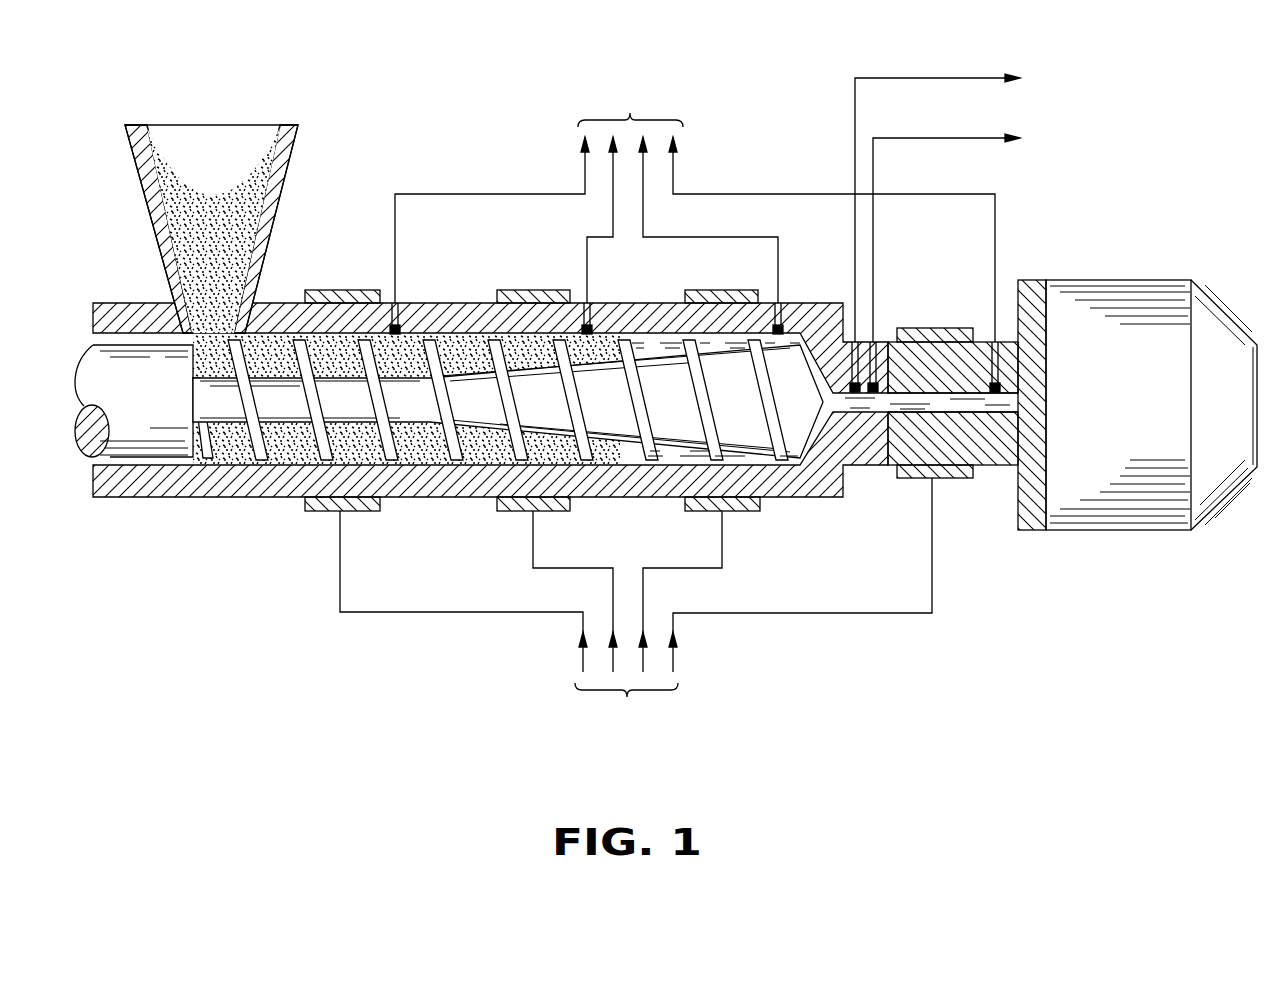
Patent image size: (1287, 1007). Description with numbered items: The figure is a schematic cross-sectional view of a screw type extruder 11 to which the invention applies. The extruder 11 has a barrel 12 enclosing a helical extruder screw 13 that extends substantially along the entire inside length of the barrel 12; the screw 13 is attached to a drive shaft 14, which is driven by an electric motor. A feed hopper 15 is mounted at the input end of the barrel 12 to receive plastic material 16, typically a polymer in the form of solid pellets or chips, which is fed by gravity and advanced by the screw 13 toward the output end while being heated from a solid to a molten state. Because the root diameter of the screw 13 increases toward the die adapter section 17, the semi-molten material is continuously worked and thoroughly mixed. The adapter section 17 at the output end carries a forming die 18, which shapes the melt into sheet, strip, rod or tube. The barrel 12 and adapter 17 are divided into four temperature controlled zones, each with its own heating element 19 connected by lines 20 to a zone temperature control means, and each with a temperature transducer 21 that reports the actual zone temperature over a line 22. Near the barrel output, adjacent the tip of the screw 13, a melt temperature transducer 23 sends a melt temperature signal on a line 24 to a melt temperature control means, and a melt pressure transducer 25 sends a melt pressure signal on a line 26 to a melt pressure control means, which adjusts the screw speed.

The screw type extruder 11 is at (290, 567).
The barrel 12 is at (616, 498).
The helical extruder screw 13 is at (430, 498).
The drive shaft 14 is at (137, 404).
The feed hopper 15 is at (164, 242).
The plastic material 16 is at (186, 150).
The die adapter section 17 is at (1001, 460).
The forming die 18 is at (1147, 412).
The heating element 19 is at (310, 513).
The lines 20 is at (418, 612).
The temperature transducer 21 is at (405, 303).
The line 22 is at (445, 194).
The melt temperature transducer 23 is at (851, 383).
The line 24 is at (855, 108).
The melt pressure transducer 25 is at (873, 383).
The line 26 is at (950, 138).